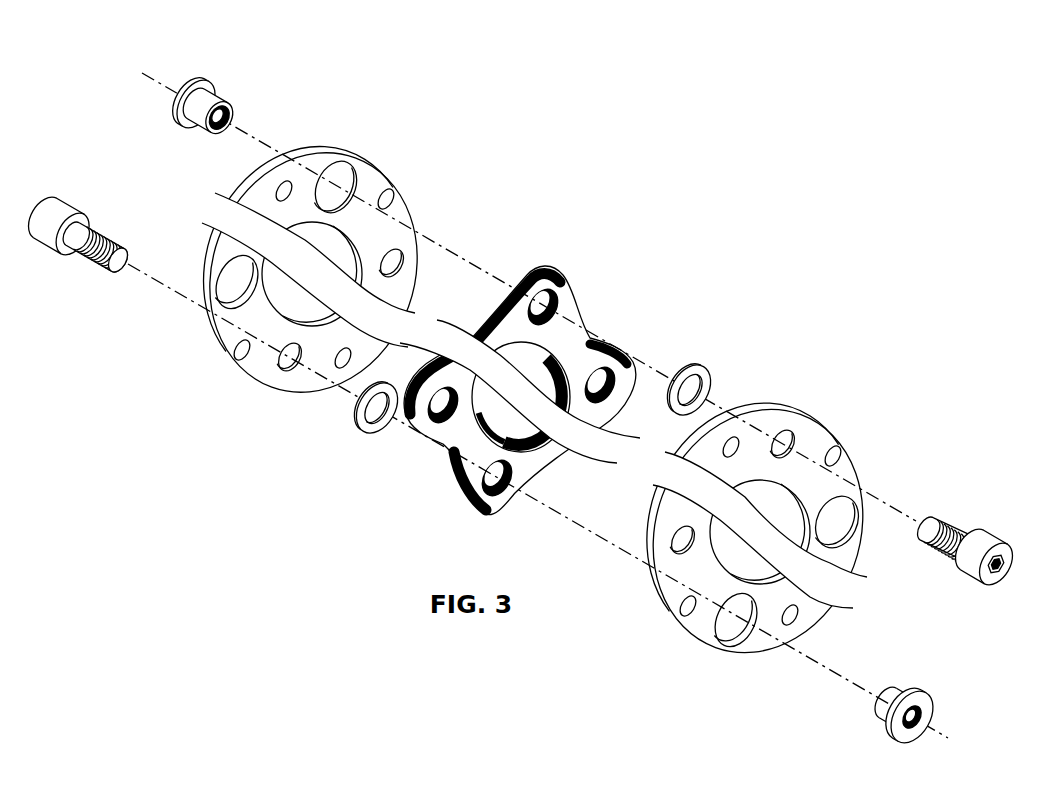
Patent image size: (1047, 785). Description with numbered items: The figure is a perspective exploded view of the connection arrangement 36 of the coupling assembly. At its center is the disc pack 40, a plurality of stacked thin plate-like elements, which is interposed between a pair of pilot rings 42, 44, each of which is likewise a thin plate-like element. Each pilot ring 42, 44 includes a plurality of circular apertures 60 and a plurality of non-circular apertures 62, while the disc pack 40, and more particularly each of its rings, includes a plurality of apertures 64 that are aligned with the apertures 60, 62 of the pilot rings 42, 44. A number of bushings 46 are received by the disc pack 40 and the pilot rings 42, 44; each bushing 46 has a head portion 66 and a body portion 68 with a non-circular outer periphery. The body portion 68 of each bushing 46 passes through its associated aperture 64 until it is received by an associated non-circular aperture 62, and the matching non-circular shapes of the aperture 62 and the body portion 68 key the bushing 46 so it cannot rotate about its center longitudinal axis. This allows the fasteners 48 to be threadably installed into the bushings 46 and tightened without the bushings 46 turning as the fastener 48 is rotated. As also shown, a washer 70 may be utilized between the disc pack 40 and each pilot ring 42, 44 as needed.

The connection arrangement 36 is at (524, 403).
The disc pack 40 is at (530, 269).
The pilot ring 42 is at (840, 430).
The pilot ring 44 is at (362, 151).
The bushing 46 is at (886, 718).
The fastener 48 is at (962, 536).
The circular aperture 60 is at (732, 647).
The non-circular aperture 62 is at (679, 555).
The aperture 64 is at (494, 495).
The head portion 66 is at (931, 700).
The body portion 68 is at (899, 689).
The washer 70 is at (701, 373).